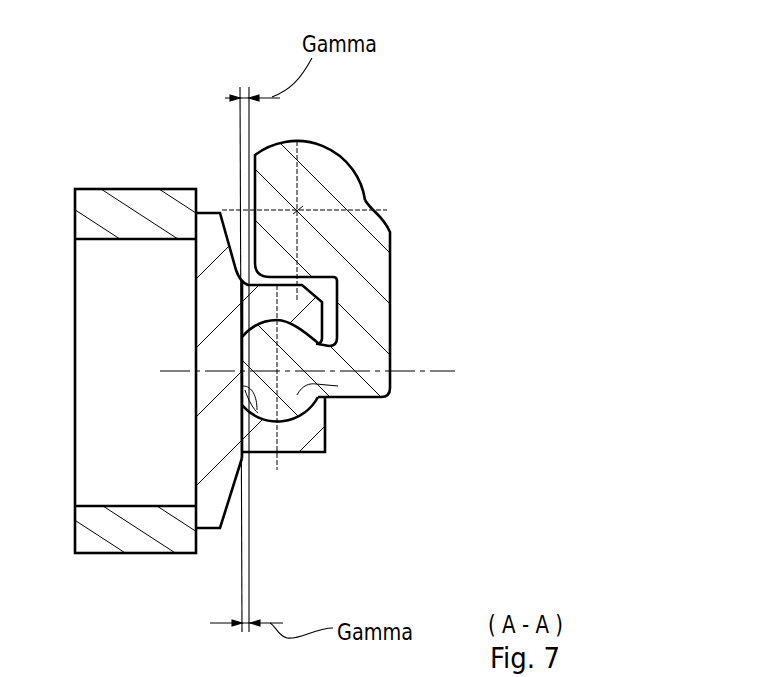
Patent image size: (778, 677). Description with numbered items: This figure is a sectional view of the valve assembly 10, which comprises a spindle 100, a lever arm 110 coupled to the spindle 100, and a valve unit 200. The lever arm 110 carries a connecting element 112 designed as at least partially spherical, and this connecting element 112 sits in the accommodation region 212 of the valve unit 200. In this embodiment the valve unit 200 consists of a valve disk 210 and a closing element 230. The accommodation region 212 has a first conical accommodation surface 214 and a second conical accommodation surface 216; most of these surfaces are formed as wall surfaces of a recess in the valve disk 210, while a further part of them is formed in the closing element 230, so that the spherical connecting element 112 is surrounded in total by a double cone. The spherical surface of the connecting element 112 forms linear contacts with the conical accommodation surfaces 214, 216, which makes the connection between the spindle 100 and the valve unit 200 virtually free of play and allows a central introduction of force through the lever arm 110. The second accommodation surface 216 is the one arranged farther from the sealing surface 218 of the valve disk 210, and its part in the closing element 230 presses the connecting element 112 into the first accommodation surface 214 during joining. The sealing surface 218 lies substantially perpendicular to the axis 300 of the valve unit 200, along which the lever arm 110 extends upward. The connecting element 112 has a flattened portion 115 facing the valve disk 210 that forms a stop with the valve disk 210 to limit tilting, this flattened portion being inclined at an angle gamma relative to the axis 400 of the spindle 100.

The valve assembly 10 is at (492, 178).
The spindle 100 is at (362, 171).
The lever arm 110 is at (397, 297).
The connecting element 112 is at (260, 347).
The flattened portion 115 is at (270, 380).
The valve unit 200 is at (367, 470).
The valve disk 210 is at (207, 212).
The accommodation region 212 is at (297, 423).
The first conical accommodation surface 214 is at (243, 388).
The second conical accommodation surface 216 is at (300, 392).
The sealing surface 218 is at (196, 240).
The closing element 230 is at (288, 440).
The axis 300 is at (445, 370).
The axis of spindle 400 is at (313, 198).